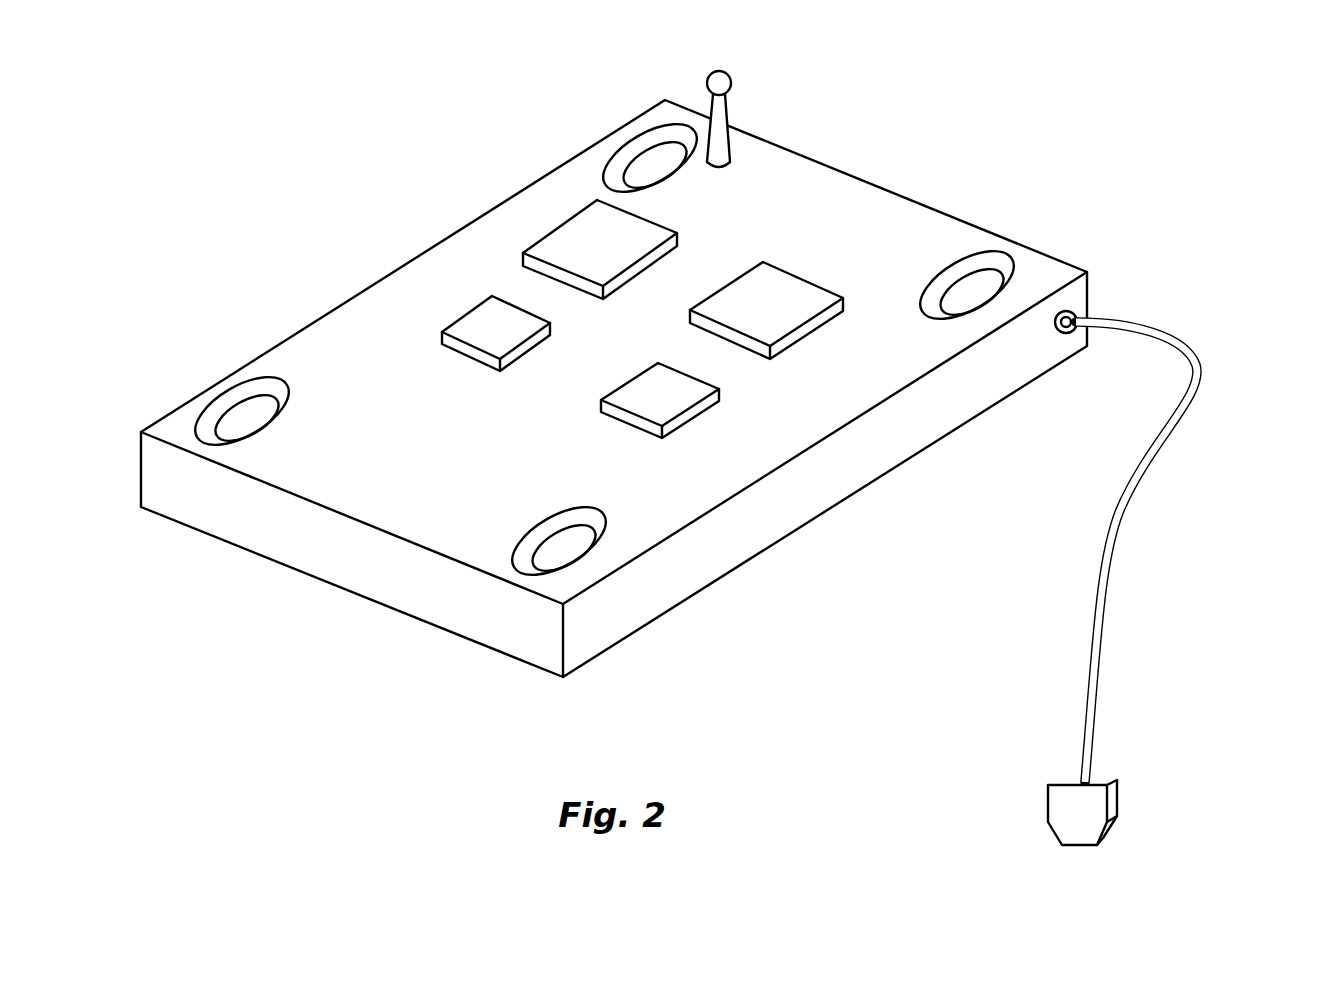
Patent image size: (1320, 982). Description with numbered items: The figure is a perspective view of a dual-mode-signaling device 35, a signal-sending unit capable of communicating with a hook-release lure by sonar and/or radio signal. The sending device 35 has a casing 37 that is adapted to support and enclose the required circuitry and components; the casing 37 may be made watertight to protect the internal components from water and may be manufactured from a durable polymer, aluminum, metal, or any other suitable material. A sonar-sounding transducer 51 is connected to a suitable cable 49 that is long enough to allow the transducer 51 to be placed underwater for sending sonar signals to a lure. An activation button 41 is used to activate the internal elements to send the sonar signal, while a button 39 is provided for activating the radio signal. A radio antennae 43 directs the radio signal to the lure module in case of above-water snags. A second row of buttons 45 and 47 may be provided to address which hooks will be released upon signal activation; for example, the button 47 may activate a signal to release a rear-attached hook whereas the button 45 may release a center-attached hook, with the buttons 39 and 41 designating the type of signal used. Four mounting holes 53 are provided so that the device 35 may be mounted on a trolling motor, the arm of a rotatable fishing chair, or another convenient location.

The dual-mode-signaling device 35 is at (312, 225).
The casing 37 is at (328, 583).
The button 39 is at (540, 232).
The activation button 41 is at (845, 304).
The radio antennae 43 is at (730, 112).
The button 45 is at (468, 352).
The button 47 is at (637, 425).
The cable 49 is at (1177, 427).
The sonar-sounding transducer 51 is at (1048, 807).
The mounting holes 53 is at (198, 396).